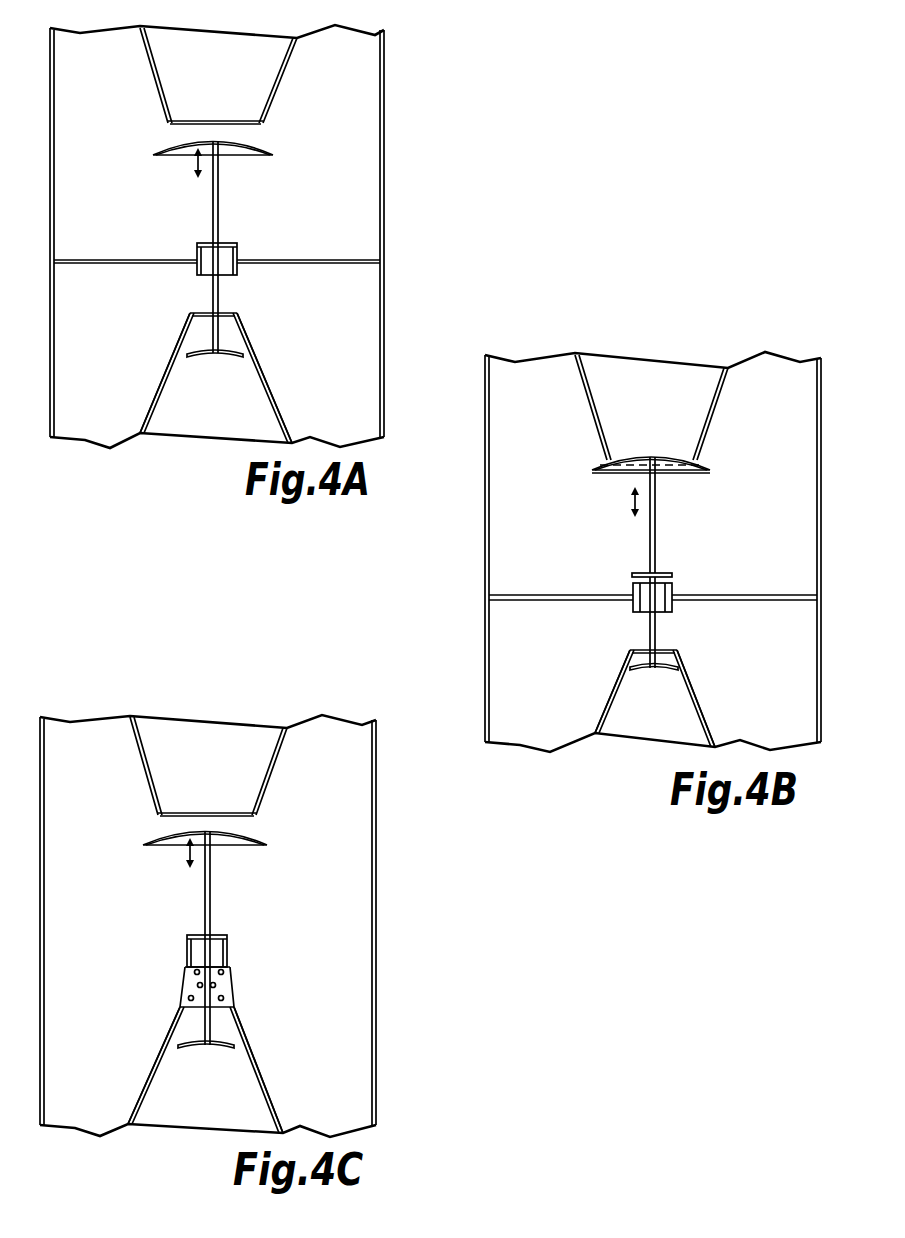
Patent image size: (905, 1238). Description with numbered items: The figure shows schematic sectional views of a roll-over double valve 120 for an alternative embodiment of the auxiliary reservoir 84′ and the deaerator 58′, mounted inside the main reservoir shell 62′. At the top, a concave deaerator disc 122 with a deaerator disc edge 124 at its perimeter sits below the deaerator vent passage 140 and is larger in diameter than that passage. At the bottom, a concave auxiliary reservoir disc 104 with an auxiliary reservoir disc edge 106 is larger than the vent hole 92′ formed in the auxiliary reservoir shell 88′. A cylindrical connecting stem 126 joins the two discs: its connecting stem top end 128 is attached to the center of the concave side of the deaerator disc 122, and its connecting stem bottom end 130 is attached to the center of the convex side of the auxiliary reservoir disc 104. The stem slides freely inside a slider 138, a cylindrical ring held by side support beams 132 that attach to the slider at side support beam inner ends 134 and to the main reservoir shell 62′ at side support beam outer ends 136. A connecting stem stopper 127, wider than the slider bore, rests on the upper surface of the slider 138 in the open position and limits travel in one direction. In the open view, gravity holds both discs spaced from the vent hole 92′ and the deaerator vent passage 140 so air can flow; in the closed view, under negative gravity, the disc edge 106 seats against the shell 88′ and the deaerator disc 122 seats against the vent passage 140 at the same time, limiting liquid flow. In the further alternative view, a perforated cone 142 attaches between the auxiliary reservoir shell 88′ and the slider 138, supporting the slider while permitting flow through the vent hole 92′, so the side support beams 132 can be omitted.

In FIG. 4A, the roll-over double valve 120 is at (455, 128).
In FIG. 4B, the roll-over double valve 120 is at (480, 505).
In FIG. 4C, the roll-over double valve 120 is at (388, 940).
In FIG. 4A, the main reservoir shell 62′ is at (385, 222).
In FIG. 4B, the main reservoir shell 62′ is at (821, 560).
In FIG. 4C, the main reservoir shell 62′ is at (376, 1013).
In FIG. 4A, the deaerator 58′ is at (285, 78).
In FIG. 4B, the deaerator 58′ is at (728, 380).
In FIG. 4C, the deaerator 58′ is at (277, 768).
In FIG. 4A, the deaerator vent passage 140 is at (195, 122).
In FIG. 4B, the deaerator vent passage 140 is at (632, 467).
In FIG. 4C, the deaerator vent passage 140 is at (185, 812).
In FIG. 4A, the deaerator disc 122 is at (272, 152).
In FIG. 4B, the deaerator disc 122 is at (708, 470).
In FIG. 4C, the deaerator disc 122 is at (262, 842).
In FIG. 4A, the deaerator disc edge 124 is at (275, 156).
In FIG. 4B, the deaerator disc edge 124 is at (710, 472).
In FIG. 4C, the deaerator disc edge 124 is at (265, 846).
In FIG. 4A, the connecting stem top end 128 is at (220, 145).
In FIG. 4B, the connecting stem top end 128 is at (658, 460).
In FIG. 4C, the connecting stem top end 128 is at (210, 835).
In FIG. 4A, the connecting stem 126 is at (212, 218).
In FIG. 4B, the connecting stem 126 is at (650, 542).
In FIG. 4C, the connecting stem 126 is at (204, 908).
In FIG. 4A, the connecting stem stopper 127 is at (222, 243).
In FIG. 4B, the connecting stem stopper 127 is at (666, 573).
In FIG. 4C, the connecting stem stopper 127 is at (212, 935).
In FIG. 4A, the side support beam inner ends 134 is at (197, 250).
In FIG. 4B, the side support beam inner ends 134 is at (633, 590).
In FIG. 4A, the slider 138 is at (197, 272).
In FIG. 4B, the slider 138 is at (633, 603).
In FIG. 4C, the slider 138 is at (187, 955).
In FIG. 4A, the side support beam outer ends 136 is at (54, 258).
In FIG. 4B, the side support beam outer ends 136 is at (489, 593).
In FIG. 4A, the side support beams 132 is at (100, 265).
In FIG. 4B, the side support beams 132 is at (537, 602).
In FIG. 4A, the vent hole 92′ is at (195, 312).
In FIG. 4B, the vent hole 92′ is at (645, 648).
In FIG. 4C, the vent hole 92′ is at (188, 990).
In FIG. 4A, the auxiliary reservoir 84′ is at (283, 400).
In FIG. 4B, the auxiliary reservoir 84′ is at (708, 710).
In FIG. 4C, the auxiliary reservoir 84′ is at (272, 1088).
In FIG. 4A, the auxiliary reservoir disc edge 106 is at (190, 352).
In FIG. 4B, the auxiliary reservoir disc edge 106 is at (633, 670).
In FIG. 4C, the auxiliary reservoir disc edge 106 is at (178, 1045).
In FIG. 4A, the auxiliary reservoir shell 88′ is at (292, 423).
In FIG. 4B, the auxiliary reservoir shell 88′ is at (717, 735).
In FIG. 4C, the auxiliary reservoir shell 88′ is at (284, 1116).
In FIG. 4A, the connecting stem bottom end 130 is at (222, 348).
In FIG. 4B, the connecting stem bottom end 130 is at (660, 662).
In FIG. 4C, the connecting stem bottom end 130 is at (215, 1040).
In FIG. 4A, the auxiliary reservoir disc 104 is at (195, 360).
In FIG. 4B, the auxiliary reservoir disc 104 is at (645, 672).
In FIG. 4C, the auxiliary reservoir disc 104 is at (186, 1048).
In FIG. 4C, the perforated cone 142 is at (228, 993).